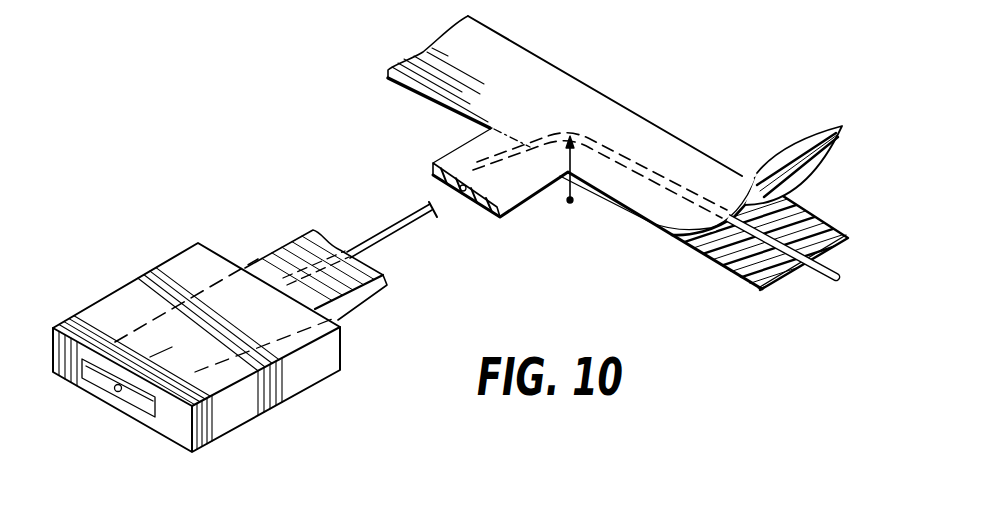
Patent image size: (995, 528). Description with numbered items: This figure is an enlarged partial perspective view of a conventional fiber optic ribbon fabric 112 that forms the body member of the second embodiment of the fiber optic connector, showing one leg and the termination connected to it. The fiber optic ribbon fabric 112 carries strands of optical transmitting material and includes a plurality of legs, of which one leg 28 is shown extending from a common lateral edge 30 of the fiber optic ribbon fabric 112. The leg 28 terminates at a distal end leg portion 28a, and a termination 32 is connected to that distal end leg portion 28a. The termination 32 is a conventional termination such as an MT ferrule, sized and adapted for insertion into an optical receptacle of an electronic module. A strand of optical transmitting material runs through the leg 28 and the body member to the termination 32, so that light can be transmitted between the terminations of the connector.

The leg 28 is at (360, 287).
The distal end leg portion 28a is at (137, 330).
The lateral edge 30 is at (629, 212).
The termination 32 is at (323, 352).
The fiber optic ribbon fabric 112 is at (714, 190).